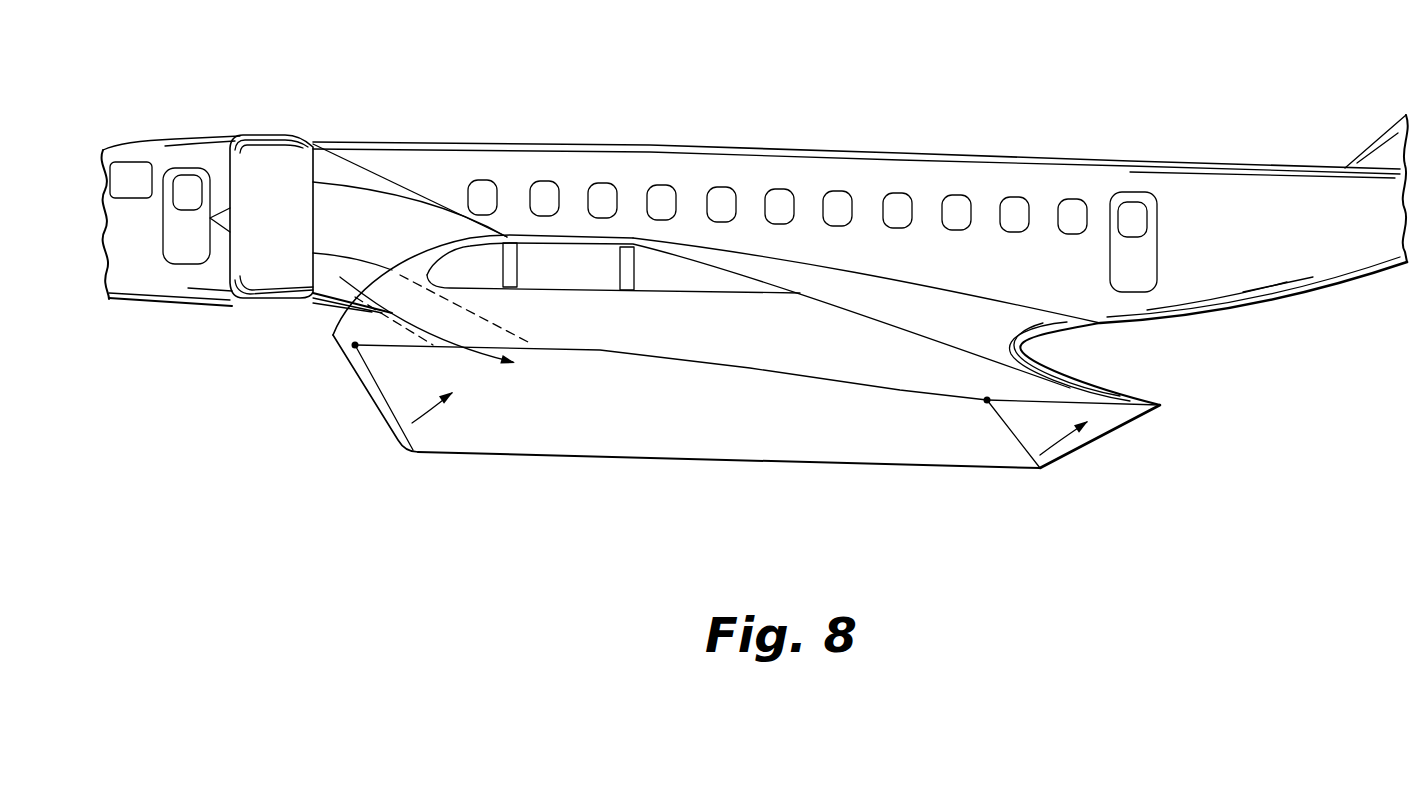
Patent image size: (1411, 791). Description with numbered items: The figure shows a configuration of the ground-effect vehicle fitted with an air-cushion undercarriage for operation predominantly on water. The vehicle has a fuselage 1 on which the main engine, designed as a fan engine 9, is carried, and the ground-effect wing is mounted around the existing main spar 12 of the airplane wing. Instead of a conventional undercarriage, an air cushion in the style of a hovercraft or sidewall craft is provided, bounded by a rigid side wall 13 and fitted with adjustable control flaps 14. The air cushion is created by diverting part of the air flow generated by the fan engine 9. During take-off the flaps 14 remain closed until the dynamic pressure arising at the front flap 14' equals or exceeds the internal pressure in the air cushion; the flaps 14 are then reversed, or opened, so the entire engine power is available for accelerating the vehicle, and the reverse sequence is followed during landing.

The fuselage 1 is at (826, 177).
The fan engine 9 is at (268, 162).
The main spar 12 is at (510, 243).
The rigid side wall 13 is at (737, 423).
The control flap 14 is at (1042, 473).
The front flap 14' is at (369, 442).